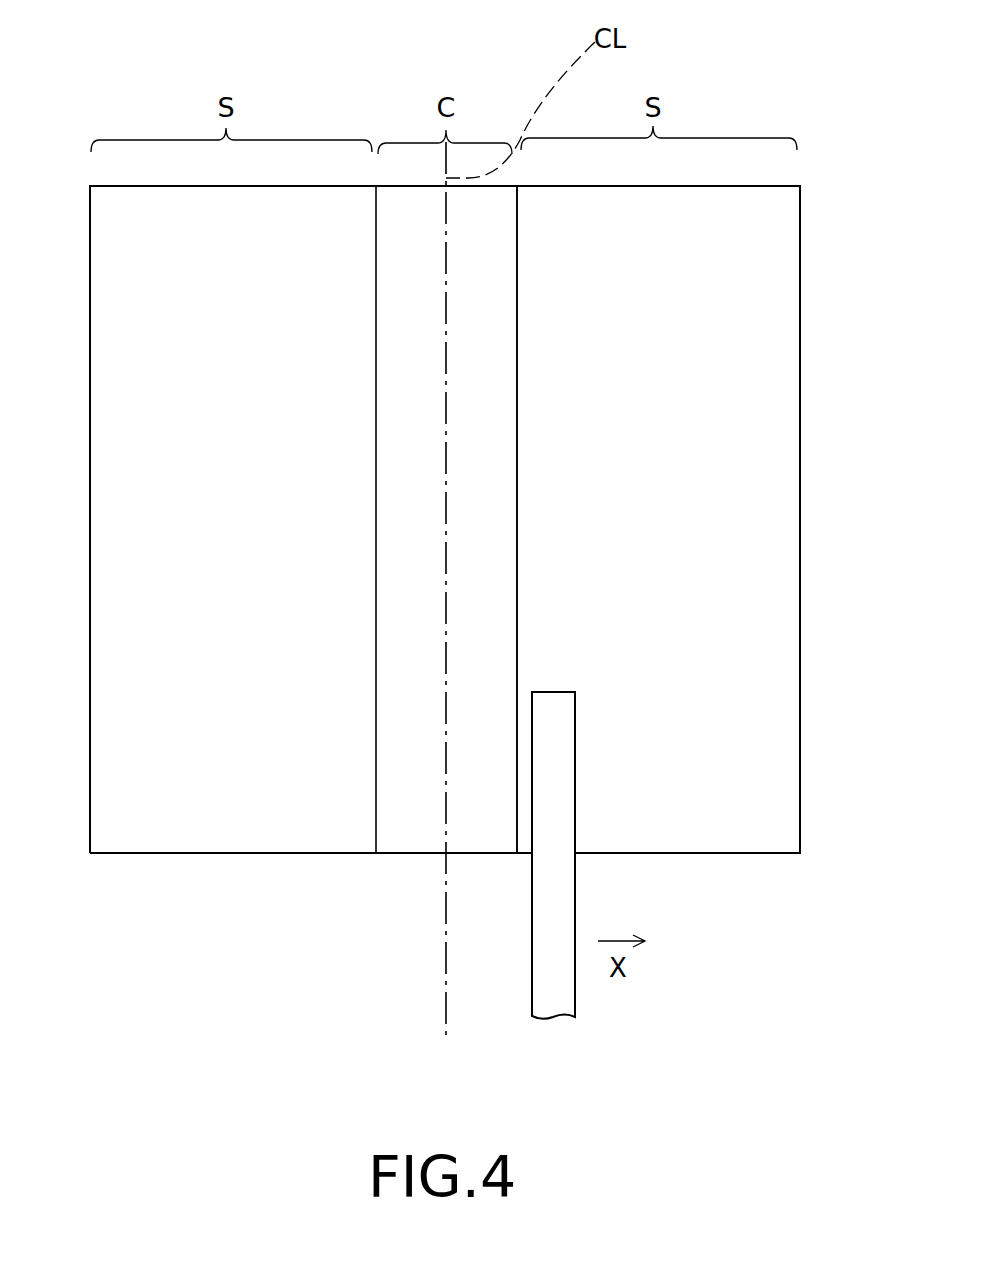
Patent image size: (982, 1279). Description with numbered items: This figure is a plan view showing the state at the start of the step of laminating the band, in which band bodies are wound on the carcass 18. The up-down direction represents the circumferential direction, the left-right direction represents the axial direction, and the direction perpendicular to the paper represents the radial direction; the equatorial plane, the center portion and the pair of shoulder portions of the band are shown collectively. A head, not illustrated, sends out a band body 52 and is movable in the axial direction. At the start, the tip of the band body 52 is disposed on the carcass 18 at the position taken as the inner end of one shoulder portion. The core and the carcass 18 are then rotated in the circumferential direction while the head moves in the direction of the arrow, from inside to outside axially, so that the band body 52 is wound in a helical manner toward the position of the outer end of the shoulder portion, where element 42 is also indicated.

The carcass 18 is at (144, 828).
The side region of plate 42 is at (730, 830).
The band body 52 is at (553, 1007).